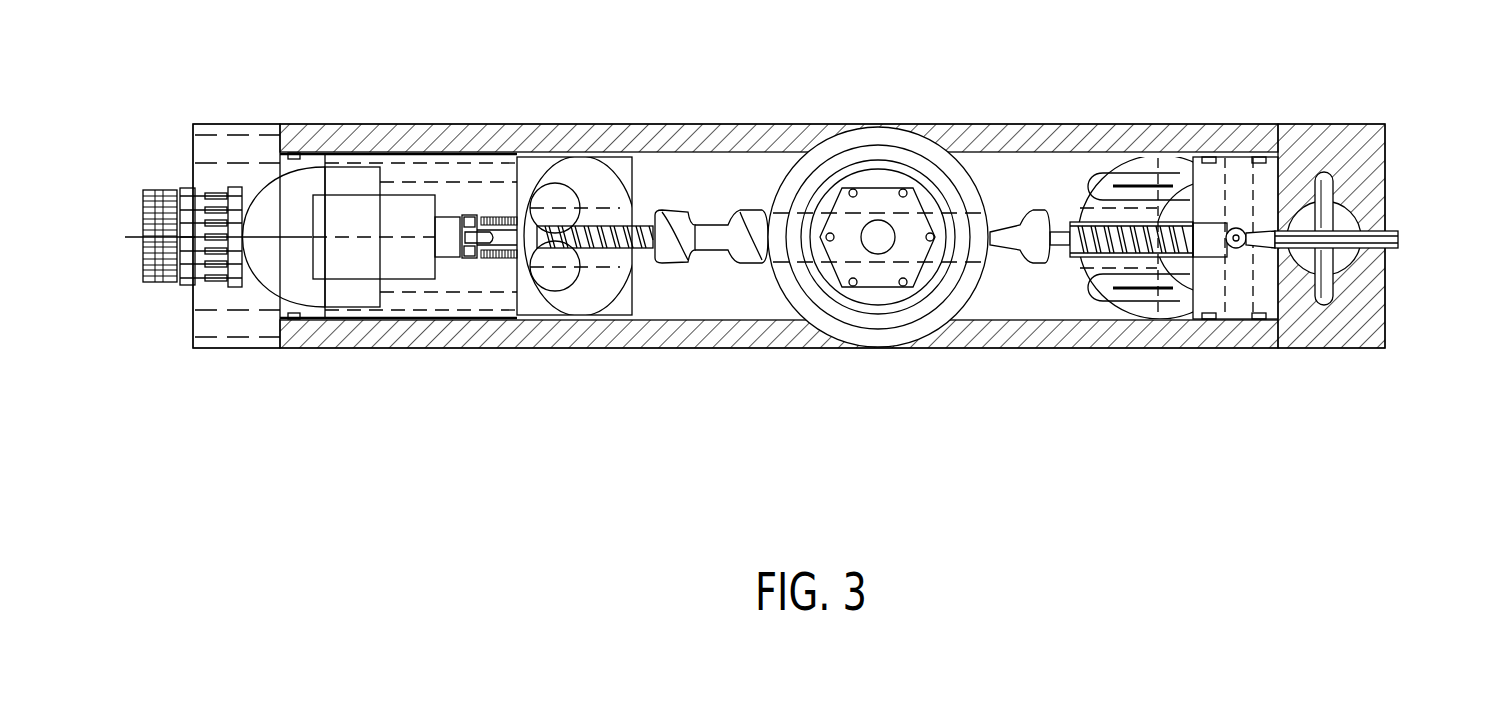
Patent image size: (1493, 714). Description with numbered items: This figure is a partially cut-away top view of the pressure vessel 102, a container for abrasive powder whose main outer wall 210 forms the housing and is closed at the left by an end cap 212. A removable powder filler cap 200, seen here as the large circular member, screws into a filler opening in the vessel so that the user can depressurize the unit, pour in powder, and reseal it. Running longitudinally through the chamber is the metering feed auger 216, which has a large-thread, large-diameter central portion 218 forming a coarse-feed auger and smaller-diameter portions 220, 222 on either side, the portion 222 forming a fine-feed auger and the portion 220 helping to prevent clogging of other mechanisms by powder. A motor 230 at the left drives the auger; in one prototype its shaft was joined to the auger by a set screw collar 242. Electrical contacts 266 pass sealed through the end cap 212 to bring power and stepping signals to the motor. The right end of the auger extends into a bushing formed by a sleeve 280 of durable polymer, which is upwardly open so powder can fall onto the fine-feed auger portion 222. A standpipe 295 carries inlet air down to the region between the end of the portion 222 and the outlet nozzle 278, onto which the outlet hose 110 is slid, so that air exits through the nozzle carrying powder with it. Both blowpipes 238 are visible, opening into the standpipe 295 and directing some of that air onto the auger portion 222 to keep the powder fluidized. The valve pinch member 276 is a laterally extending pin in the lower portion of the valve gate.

The pressure vessel 102 is at (786, 372).
The outlet hose 110 is at (1392, 230).
The powder filler cap 200 is at (907, 270).
The main outer wall 210 is at (970, 124).
The end cap 212 is at (310, 348).
The metering feed auger 216 is at (677, 253).
The central auger portion 218 is at (750, 213).
The small-diameter auger portion 220 is at (625, 215).
The fine-feed auger portion 222 is at (1105, 257).
The motor 230 is at (382, 270).
The blowpipes 238 is at (1112, 172).
The set screw collar 242 is at (470, 217).
The electrical contacts 266 is at (170, 283).
The valve pinch member 276 is at (1327, 305).
The outlet nozzle 278 is at (1268, 227).
The sleeve 280 is at (1160, 255).
The standpipe 295 is at (1228, 253).